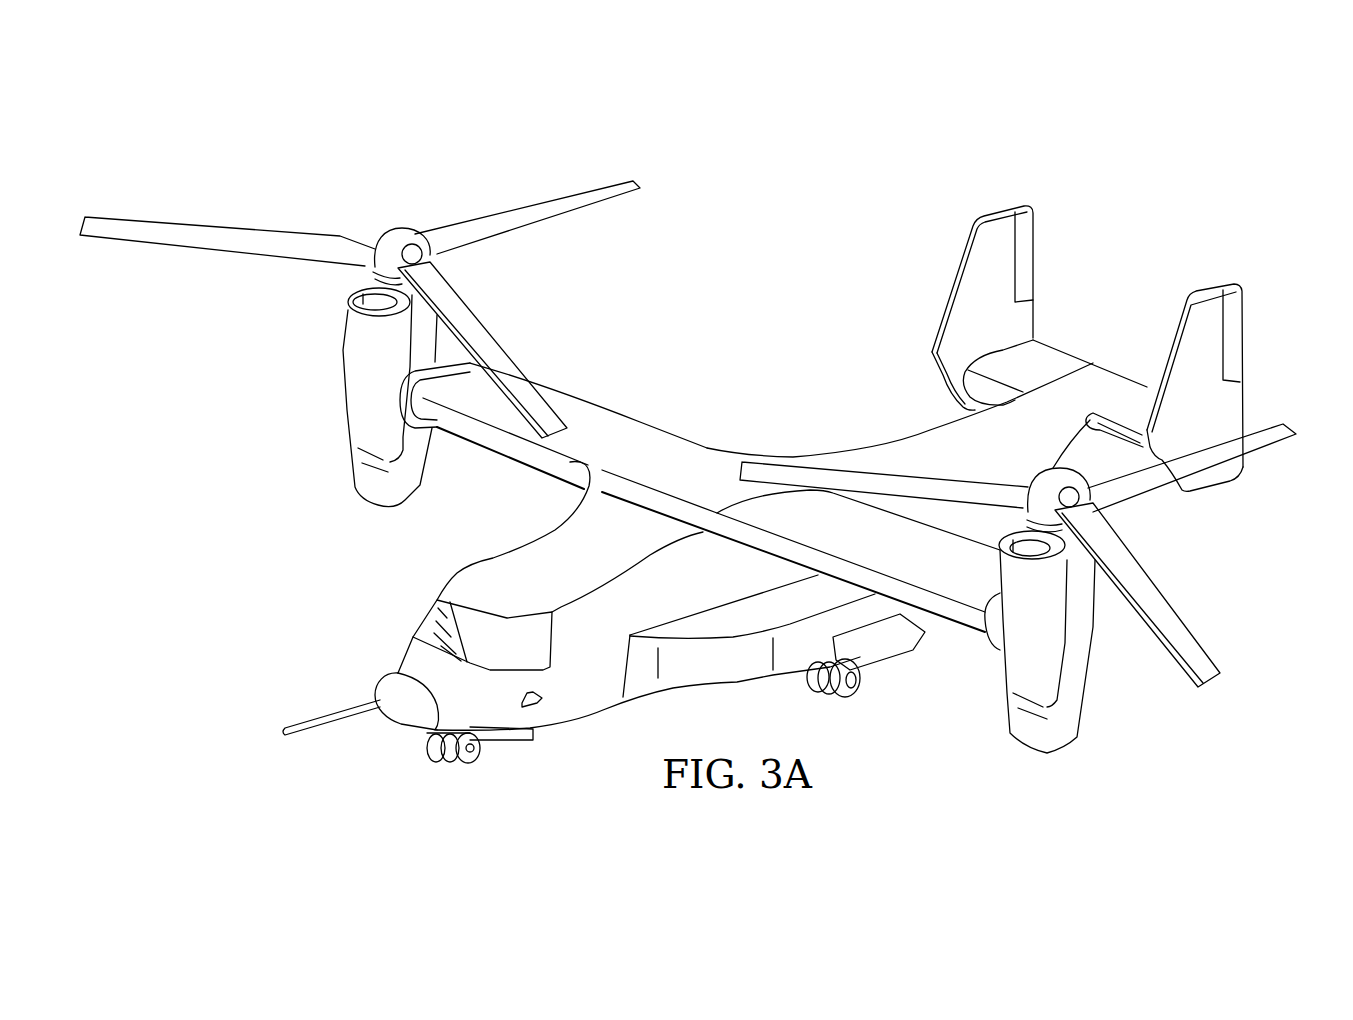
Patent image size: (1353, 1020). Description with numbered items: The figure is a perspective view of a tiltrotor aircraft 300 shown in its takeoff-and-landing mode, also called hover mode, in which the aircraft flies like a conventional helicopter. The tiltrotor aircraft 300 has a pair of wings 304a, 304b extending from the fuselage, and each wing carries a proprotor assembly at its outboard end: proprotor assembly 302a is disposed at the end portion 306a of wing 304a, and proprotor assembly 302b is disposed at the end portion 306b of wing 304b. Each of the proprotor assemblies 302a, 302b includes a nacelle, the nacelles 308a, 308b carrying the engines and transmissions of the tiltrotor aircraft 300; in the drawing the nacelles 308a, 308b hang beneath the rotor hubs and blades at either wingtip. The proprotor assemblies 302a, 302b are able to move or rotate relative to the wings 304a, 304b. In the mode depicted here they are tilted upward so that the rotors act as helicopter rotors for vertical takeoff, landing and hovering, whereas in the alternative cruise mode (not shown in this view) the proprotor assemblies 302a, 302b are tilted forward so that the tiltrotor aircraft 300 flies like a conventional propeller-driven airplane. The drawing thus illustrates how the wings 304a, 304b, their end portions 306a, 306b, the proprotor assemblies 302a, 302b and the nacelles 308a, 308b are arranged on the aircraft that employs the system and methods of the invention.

The tiltrotor aircraft 300 is at (965, 146).
The proprotor assembly 302a is at (320, 304).
The proprotor assembly 302b is at (1222, 586).
The wing 304a is at (608, 420).
The wing 304b is at (847, 583).
The end portion 306a is at (452, 350).
The end portion 306b is at (989, 533).
The nacelle 308a is at (348, 402).
The nacelle 308b is at (1087, 692).